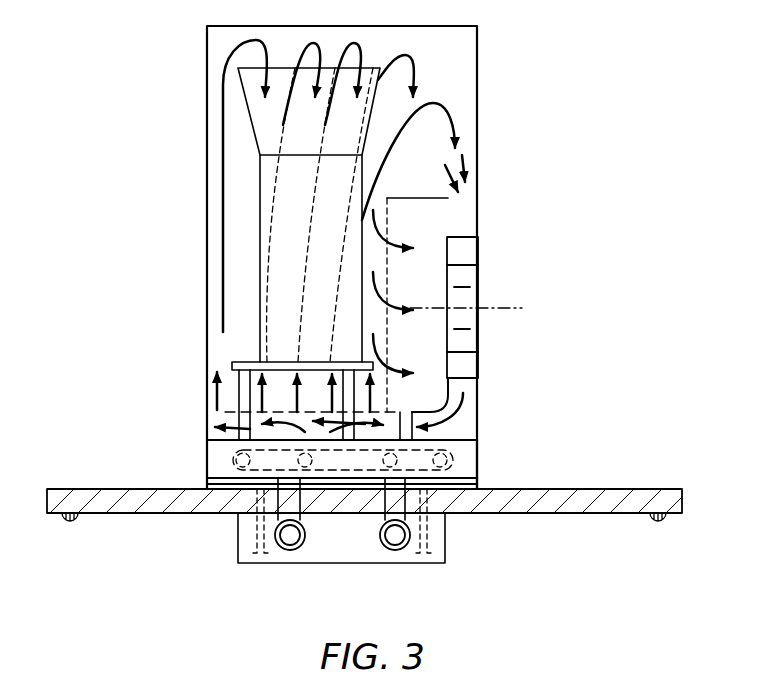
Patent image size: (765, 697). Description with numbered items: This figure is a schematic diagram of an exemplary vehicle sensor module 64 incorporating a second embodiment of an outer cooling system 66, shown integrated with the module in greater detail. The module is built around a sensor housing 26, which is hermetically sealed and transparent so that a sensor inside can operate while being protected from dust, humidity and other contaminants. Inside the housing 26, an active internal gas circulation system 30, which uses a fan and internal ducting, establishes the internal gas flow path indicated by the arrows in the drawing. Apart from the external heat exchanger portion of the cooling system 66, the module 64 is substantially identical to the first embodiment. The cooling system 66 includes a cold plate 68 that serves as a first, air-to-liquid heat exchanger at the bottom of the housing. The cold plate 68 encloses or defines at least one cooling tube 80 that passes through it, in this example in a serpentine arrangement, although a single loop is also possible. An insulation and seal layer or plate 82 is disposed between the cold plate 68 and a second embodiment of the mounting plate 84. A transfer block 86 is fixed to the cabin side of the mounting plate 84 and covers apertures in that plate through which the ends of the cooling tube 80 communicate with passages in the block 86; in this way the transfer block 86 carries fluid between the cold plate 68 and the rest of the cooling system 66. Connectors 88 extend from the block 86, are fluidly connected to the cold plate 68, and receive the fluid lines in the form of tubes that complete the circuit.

The sensor housing 26 is at (478, 67).
The internal gas circulation system 30 is at (467, 236).
The vehicle sensor module 64 is at (612, 218).
The cooling system 66 is at (513, 455).
The cold plate 68 is at (468, 448).
The cooling tube 80 is at (232, 460).
The insulation and seal layer 82 is at (478, 485).
The mounting plate 84 is at (90, 489).
The transfer block 86 is at (238, 548).
The connectors 88 is at (290, 550).